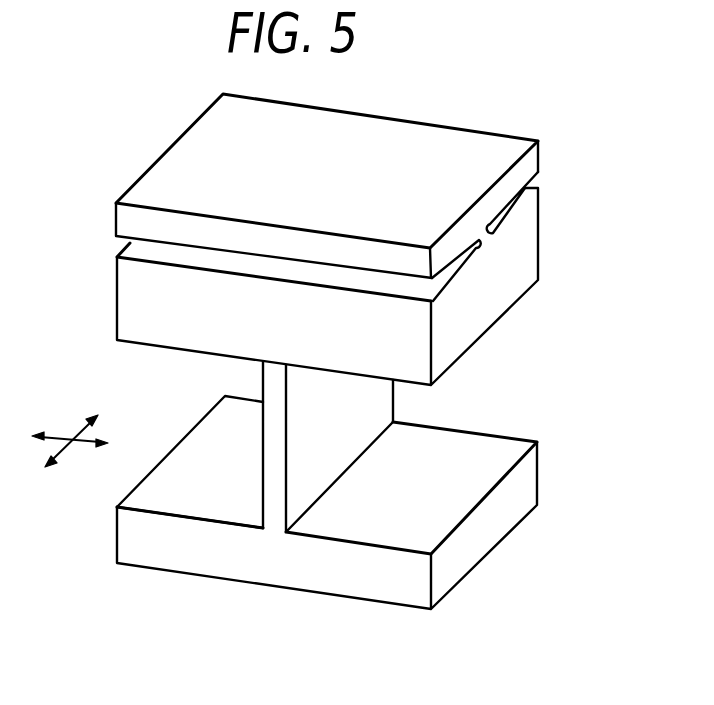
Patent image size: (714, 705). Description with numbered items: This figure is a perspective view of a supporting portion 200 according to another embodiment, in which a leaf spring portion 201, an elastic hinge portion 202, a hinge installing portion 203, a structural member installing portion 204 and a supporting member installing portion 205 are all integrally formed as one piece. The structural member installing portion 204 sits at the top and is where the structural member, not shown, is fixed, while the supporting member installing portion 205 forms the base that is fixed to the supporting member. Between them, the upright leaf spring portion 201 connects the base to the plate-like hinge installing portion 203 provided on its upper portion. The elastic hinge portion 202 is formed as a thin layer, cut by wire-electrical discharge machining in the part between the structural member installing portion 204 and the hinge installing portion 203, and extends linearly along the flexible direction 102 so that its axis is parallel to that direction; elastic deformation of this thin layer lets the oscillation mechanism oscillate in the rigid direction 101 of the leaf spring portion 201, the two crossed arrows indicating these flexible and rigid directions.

The supporting portion 200 is at (150, 132).
The leaf spring portion 201 is at (275, 460).
The elastic hinge portion 202 is at (483, 233).
The hinge installing portion 203 is at (492, 298).
The structural member installing portion 204 is at (480, 147).
The supporting member installing portion 205 is at (505, 513).
The rigid direction 101 is at (70, 438).
The flexible direction 102 is at (70, 438).